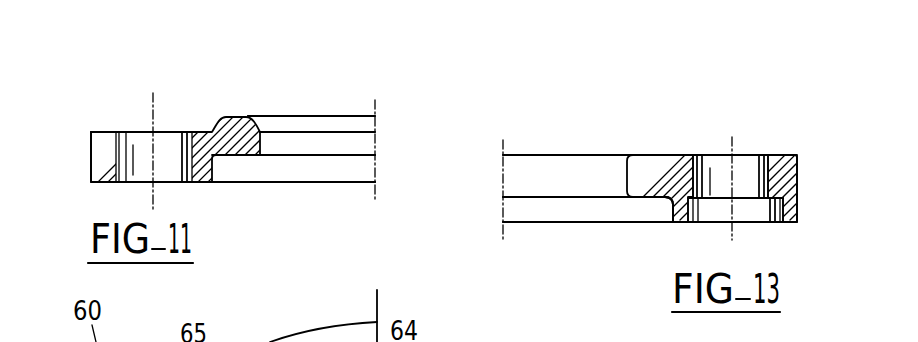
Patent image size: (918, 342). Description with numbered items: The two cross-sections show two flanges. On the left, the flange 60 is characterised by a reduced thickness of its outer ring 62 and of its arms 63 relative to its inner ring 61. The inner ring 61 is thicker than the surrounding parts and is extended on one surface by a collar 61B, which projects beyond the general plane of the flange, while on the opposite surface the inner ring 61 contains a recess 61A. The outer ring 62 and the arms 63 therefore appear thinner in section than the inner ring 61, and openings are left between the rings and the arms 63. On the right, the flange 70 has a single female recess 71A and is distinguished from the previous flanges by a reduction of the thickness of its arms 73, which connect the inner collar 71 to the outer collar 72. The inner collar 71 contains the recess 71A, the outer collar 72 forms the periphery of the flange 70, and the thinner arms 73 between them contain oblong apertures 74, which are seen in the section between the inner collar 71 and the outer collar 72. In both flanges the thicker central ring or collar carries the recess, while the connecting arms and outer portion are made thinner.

In FIG. 11, the flange 60 is at (137, 86).
In FIG. 11, the inner ring 61 is at (242, 105).
In FIG. 11, the recess 61A is at (245, 170).
In FIG. 11, the collar 61B is at (268, 114).
In FIG. 11, the outer ring 62 is at (103, 130).
In FIG. 11, the arms 63 is at (200, 130).
In FIG. 13, the flange 70 is at (599, 146).
In FIG. 13, the inner collar 71 is at (660, 173).
In FIG. 13, the recess 71A is at (647, 203).
In FIG. 13, the outer collar 72 is at (799, 176).
In FIG. 13, the arms 73 is at (767, 202).
In FIG. 13, the oblong apertures 74 is at (721, 176).